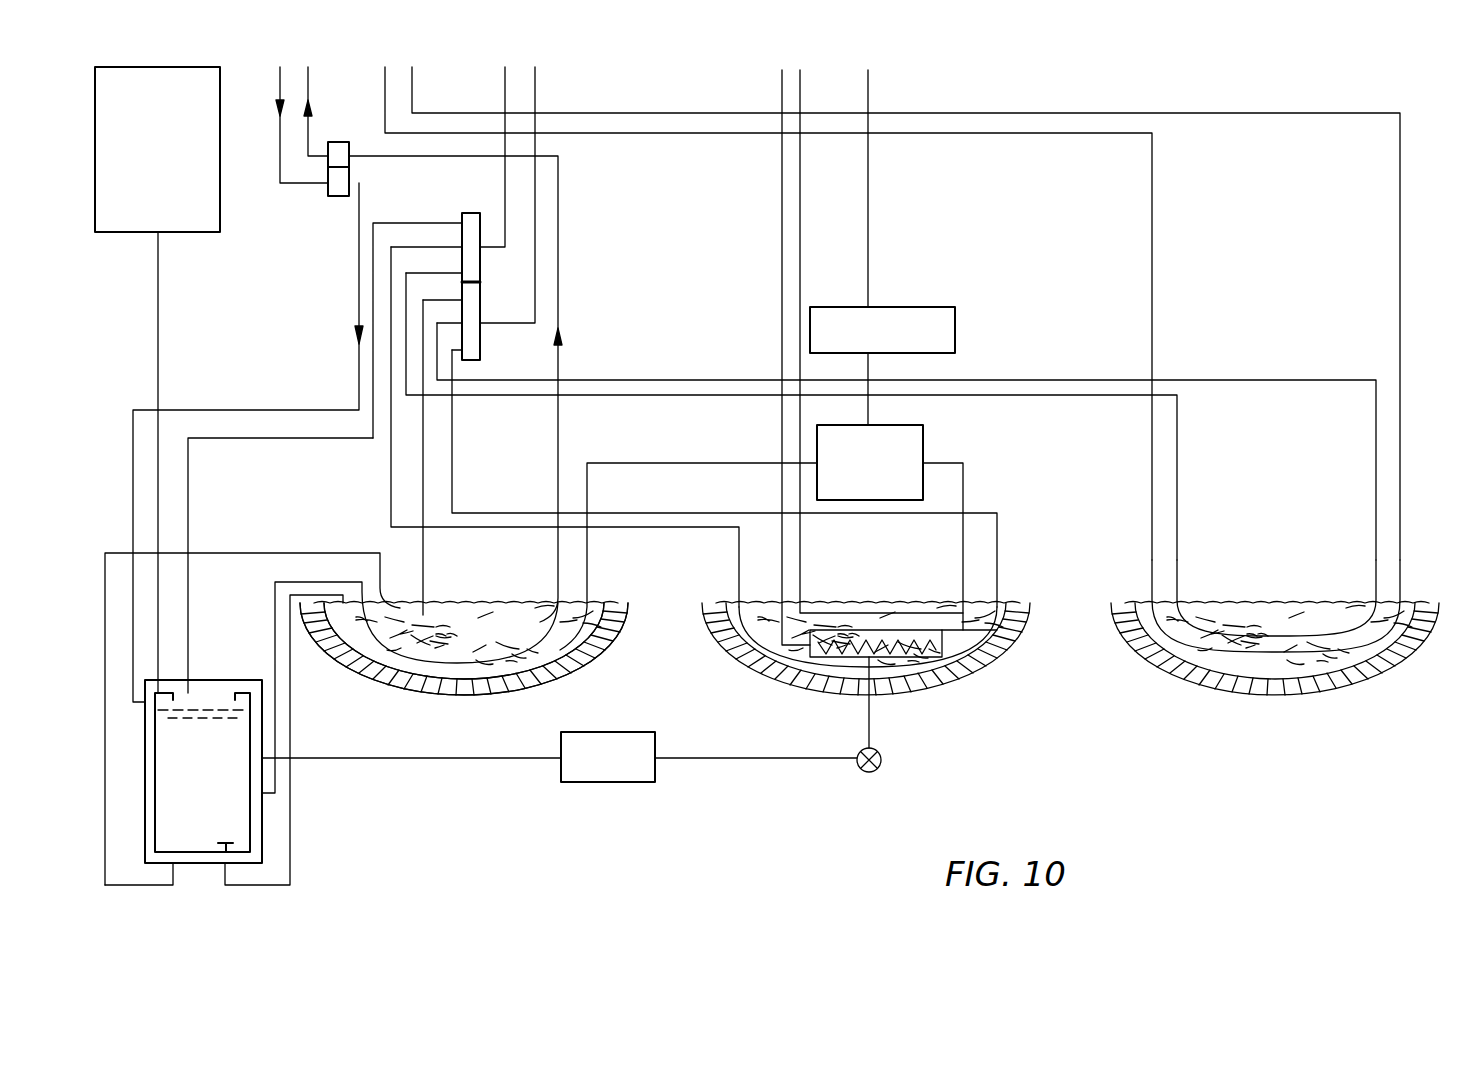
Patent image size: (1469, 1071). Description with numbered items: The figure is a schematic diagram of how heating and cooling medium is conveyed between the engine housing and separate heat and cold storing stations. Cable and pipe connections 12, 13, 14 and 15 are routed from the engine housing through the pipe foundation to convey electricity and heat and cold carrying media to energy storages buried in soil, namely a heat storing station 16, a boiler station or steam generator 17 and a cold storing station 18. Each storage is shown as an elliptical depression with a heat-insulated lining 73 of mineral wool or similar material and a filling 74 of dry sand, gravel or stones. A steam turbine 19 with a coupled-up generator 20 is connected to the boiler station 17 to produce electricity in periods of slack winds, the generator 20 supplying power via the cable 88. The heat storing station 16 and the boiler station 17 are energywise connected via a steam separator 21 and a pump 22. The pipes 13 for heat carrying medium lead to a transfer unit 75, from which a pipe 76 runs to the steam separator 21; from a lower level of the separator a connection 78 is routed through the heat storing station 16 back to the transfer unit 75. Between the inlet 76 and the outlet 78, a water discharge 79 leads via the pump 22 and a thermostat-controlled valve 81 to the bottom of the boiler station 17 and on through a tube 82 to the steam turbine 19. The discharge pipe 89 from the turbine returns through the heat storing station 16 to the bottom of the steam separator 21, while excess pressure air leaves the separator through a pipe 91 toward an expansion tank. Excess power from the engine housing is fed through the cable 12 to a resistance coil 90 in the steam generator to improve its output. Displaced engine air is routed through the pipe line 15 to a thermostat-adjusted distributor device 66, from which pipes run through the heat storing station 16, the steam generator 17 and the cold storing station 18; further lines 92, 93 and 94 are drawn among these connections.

The cable 12 is at (781, 79).
The pipes for heat carrying medium 13 is at (306, 77).
The cable and pipe connection 14 is at (394, 80).
The pipe line 15 is at (512, 82).
The heat storing station 16 is at (373, 694).
The boiler station 17 is at (986, 678).
The cold storing station 18 is at (1210, 696).
The steam turbine 19 is at (923, 445).
The generator 20 is at (937, 307).
The steam separator 21 is at (212, 787).
The pump 22 is at (649, 732).
The thermostat-adjusted distributor device 66 is at (480, 293).
The heat-insulated lining 73 is at (562, 668).
The filling 74 is at (602, 645).
The transfer unit 75 is at (335, 142).
The pipe 76 is at (358, 275).
The connection 78 is at (560, 283).
The water discharge 79 is at (430, 764).
The thermostat-controlled valve 81 is at (860, 772).
The tube 82 is at (965, 486).
The cable 88 is at (870, 232).
The discharge pipe 89 is at (645, 463).
The resistance coil 90 is at (898, 697).
The pipe 91 is at (160, 283).
The line 92 is at (424, 560).
The line 93 is at (482, 513).
The line 94 is at (680, 380).